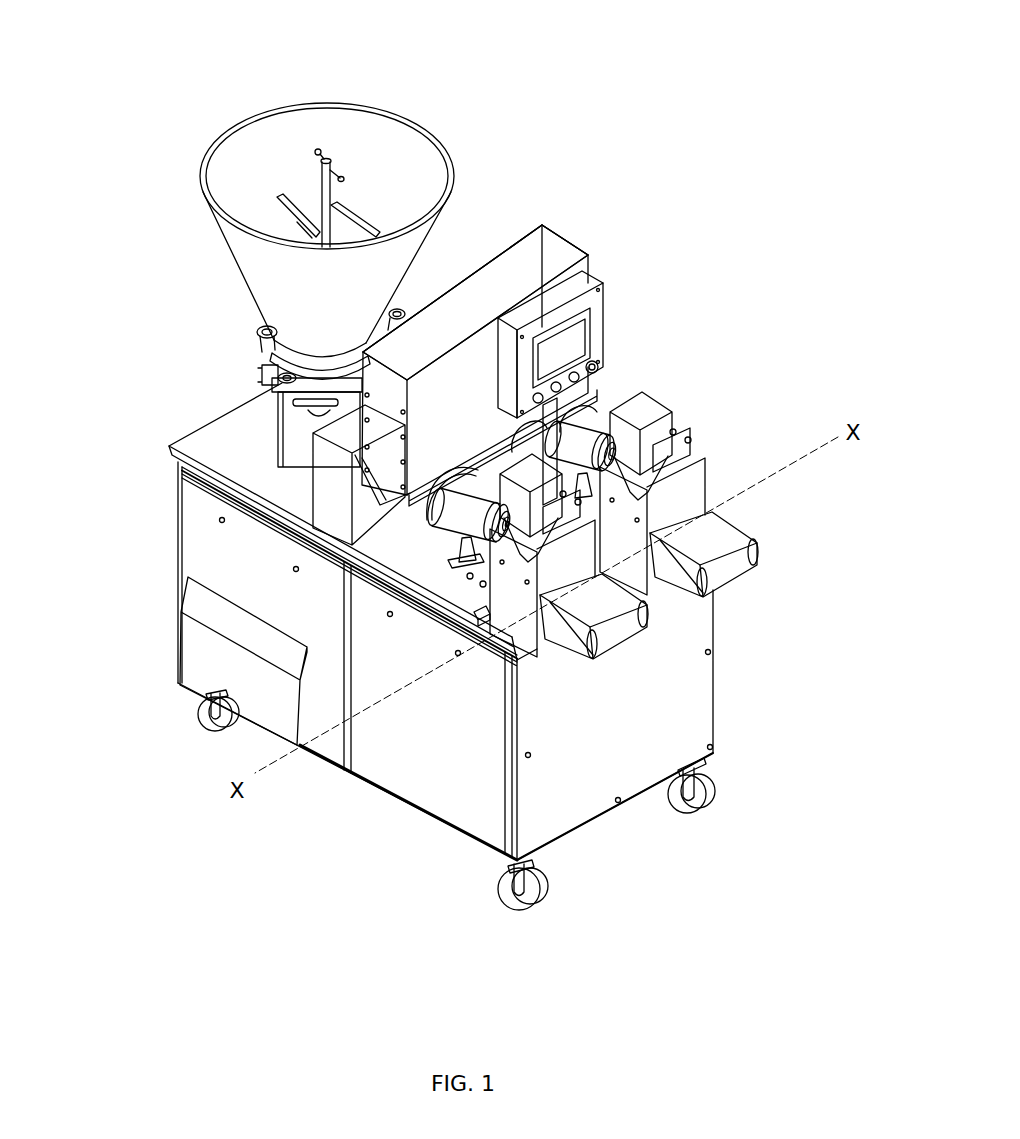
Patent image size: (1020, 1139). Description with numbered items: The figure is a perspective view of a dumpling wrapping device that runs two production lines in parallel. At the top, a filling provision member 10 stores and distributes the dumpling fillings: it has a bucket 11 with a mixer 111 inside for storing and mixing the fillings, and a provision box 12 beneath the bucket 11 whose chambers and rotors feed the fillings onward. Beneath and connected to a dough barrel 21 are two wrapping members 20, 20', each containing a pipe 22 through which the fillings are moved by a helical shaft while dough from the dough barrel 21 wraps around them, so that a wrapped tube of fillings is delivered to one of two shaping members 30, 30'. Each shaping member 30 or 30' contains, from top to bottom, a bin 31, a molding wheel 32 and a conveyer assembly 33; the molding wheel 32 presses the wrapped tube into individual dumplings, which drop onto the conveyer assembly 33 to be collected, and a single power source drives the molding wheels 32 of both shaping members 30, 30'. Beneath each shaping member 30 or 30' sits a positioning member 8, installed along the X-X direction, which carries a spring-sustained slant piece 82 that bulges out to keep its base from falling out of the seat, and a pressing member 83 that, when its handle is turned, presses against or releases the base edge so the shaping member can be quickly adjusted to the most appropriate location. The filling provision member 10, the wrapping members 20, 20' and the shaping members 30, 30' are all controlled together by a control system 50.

The positioning member 8 is at (442, 646).
The slant piece 82 is at (507, 663).
The pressing member 83 is at (481, 616).
The filling provision member 10 is at (125, 158).
The bucket 11 is at (258, 268).
The mixer 111 is at (333, 197).
The provision box 12 is at (277, 407).
The wrapping member 20 is at (516, 284).
The wrapping member 20' is at (475, 187).
The dough barrel 21 is at (567, 233).
The pipe 22 is at (465, 517).
The control system 50 is at (598, 310).
The shaping member 30 is at (714, 517).
The shaping member 30' is at (595, 583).
The bin 31 is at (645, 405).
The molding wheel 32 is at (673, 495).
The conveyer assembly 33 is at (717, 548).